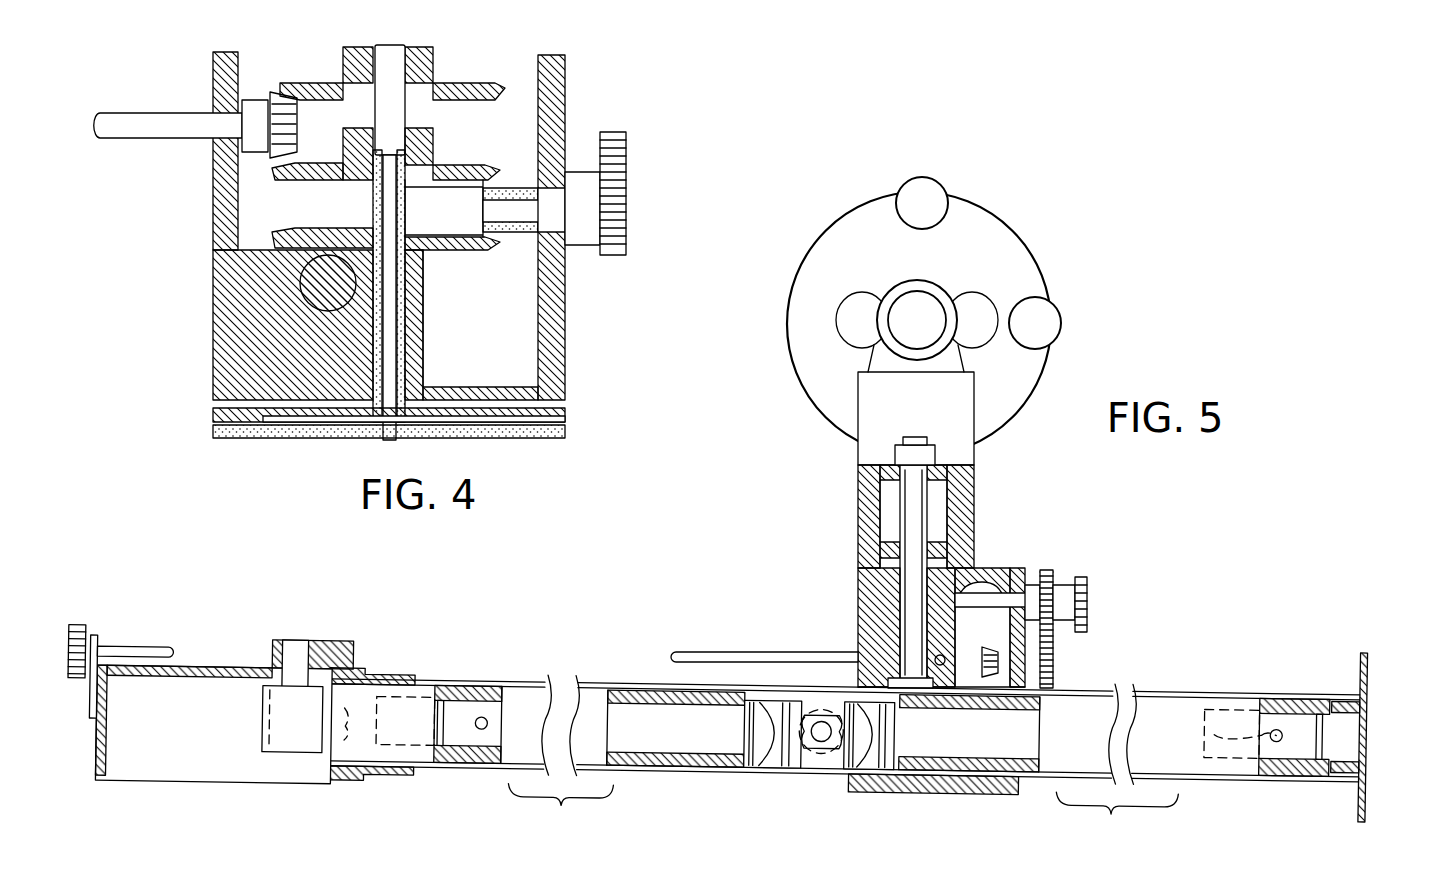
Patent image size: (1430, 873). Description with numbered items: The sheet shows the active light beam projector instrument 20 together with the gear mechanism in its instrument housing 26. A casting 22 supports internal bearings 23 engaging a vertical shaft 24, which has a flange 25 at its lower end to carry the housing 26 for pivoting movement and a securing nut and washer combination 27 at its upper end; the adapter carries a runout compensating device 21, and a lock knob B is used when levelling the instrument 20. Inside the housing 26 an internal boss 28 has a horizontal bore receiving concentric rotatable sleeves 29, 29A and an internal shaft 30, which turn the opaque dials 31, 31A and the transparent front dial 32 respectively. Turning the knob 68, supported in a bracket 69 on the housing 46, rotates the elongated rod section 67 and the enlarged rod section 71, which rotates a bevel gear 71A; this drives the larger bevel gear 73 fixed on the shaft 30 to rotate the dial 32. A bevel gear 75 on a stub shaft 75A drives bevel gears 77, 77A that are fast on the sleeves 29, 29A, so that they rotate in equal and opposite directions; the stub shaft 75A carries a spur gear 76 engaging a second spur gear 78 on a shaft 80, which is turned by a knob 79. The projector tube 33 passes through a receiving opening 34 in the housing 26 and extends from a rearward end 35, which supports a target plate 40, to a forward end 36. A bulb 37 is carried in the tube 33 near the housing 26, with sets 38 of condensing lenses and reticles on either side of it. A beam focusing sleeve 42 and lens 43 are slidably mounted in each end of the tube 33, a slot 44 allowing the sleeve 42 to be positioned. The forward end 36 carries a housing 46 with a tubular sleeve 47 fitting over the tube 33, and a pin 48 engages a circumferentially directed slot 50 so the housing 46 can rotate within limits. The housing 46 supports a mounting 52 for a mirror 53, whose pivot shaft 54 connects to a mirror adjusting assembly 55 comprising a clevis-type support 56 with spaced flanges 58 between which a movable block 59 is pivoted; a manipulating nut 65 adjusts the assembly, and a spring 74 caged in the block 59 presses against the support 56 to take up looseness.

In FIG. 5, the light beam projector instrument 20 is at (738, 784).
In FIG. 5, the runout compensating device 21 is at (1032, 242).
In FIG. 5, the casting 22 is at (858, 475).
In FIG. 5, the internal bearings 23 is at (950, 480).
In FIG. 4, the vertical shaft 24 is at (310, 275).
In FIG. 5, the vertical shaft 24 is at (905, 514).
In FIG. 5, the flange 25 is at (900, 672).
In FIG. 4, the instrument housing 26 is at (210, 385).
In FIG. 5, the instrument housing 26 is at (858, 586).
In FIG. 5, the securing nut and washer combination 27 is at (928, 432).
In FIG. 4, the internal boss 28 is at (230, 345).
In FIG. 4, the rotatable sleeve 29 is at (375, 218).
In FIG. 4, the rotatable sleeve 29A is at (432, 132).
In FIG. 4, the internal shaft 30 is at (387, 440).
In FIG. 4, the opaque dial 31 is at (565, 414).
In FIG. 4, the opaque dial 31A is at (477, 442).
In FIG. 4, the transparent front dial 32 is at (568, 438).
In FIG. 5, the tube 33 is at (582, 680).
In FIG. 5, the receiving opening 34 is at (880, 788).
In FIG. 5, the rearward end 35 is at (1346, 690).
In FIG. 5, the forward end 36 is at (385, 786).
In FIG. 5, the bulb 37 is at (820, 742).
In FIG. 5, the sets of condensing lenses and reticles 38 is at (768, 698).
In FIG. 5, the target plate 40 is at (1360, 800).
In FIG. 5, the beam focusing sleeve 42 is at (478, 690).
In FIG. 5, the lens 43 is at (441, 700).
In FIG. 5, the slot 44 is at (478, 740).
In FIG. 5, the housing 46 is at (110, 765).
In FIG. 5, the tubular sleeve 47 is at (400, 784).
In FIG. 5, the pin 48 is at (340, 700).
In FIG. 5, the circumferentially directed slot 50 is at (374, 698).
In FIG. 5, the mirror mounting 52 is at (265, 760).
In FIG. 5, the mirror 53 is at (310, 744).
In FIG. 5, the pivot shaft 54 is at (293, 645).
In FIG. 5, the mirror adjusting assembly 55 is at (336, 625).
In FIG. 5, the clevis-type support 56 is at (352, 696).
In FIG. 5, the flanges 58 is at (300, 645).
In FIG. 5, the movable block 59 is at (275, 657).
In FIG. 5, the manipulating nut 65 is at (982, 596).
In FIG. 5, the elongated rod section 67 is at (162, 655).
In FIG. 5, the knob 68 is at (82, 633).
In FIG. 5, the bracket 69 is at (100, 648).
In FIG. 4, the enlarged rod section 71 is at (138, 110).
In FIG. 5, the enlarged rod section 71 is at (672, 652).
In FIG. 4, the bevel gear 71A is at (255, 100).
In FIG. 4, the bevel gear 73 is at (310, 88).
In FIG. 5, the spring 74 is at (968, 740).
In FIG. 4, the bevel gear 75 is at (520, 232).
In FIG. 5, the bevel gear 75 is at (1000, 702).
In FIG. 4, the stub shaft 75A is at (555, 195).
In FIG. 4, the spur gear 76 is at (626, 168).
In FIG. 5, the spur gear 76 is at (1053, 665).
In FIG. 4, the bevel gear 77 is at (441, 252).
In FIG. 4, the bevel gear 77A is at (457, 167).
In FIG. 5, the spur gear 78 is at (1048, 574).
In FIG. 5, the knob 79 is at (1090, 598).
In FIG. 5, the shaft 80 is at (1033, 588).
In FIG. 5, the lock knob B is at (905, 305).